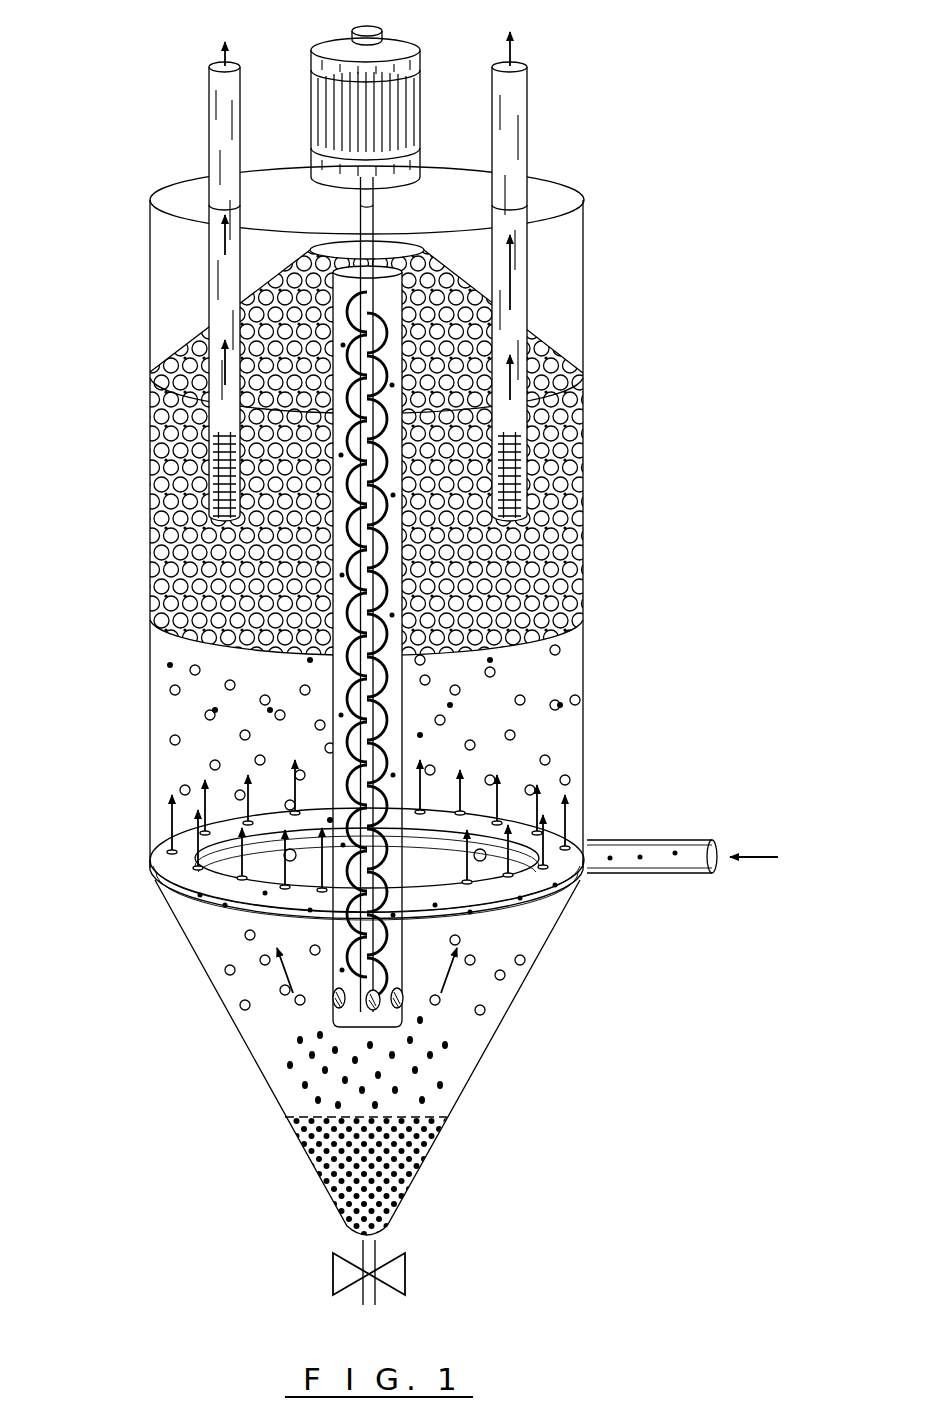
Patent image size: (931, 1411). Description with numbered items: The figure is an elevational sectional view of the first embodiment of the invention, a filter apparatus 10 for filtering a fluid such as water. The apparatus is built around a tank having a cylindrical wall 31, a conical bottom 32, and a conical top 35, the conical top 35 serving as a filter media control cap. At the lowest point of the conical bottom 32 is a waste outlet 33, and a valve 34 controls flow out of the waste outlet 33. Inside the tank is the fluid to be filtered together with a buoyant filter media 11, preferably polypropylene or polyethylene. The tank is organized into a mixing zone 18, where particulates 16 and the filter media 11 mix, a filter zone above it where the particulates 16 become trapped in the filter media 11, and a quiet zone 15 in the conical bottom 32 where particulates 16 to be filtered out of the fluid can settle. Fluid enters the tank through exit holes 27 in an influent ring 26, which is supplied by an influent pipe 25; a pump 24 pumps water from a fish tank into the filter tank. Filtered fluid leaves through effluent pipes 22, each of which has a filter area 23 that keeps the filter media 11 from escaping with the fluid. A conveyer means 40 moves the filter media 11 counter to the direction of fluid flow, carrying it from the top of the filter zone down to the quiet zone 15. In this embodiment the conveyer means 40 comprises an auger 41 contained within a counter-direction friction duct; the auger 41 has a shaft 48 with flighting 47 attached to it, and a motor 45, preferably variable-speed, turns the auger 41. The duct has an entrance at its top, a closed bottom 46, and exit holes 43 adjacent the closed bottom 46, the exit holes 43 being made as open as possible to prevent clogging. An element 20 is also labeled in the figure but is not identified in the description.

The filter apparatus 10 is at (98, 60).
The buoyant filter media 11 is at (585, 510).
The quiet zone 15 is at (228, 957).
The particulates 16 is at (195, 402).
The mixing zone 18 is at (178, 697).
The vessel top 20 is at (585, 385).
The effluent pipes 22 is at (209, 95).
The filter area 23 is at (215, 472).
The pump 24 is at (528, 483).
The influent pipe 25 is at (670, 872).
The influent ring 26 is at (150, 866).
The exit holes 27 is at (175, 848).
The cylindrical wall 31 is at (590, 712).
The conical bottom 32 is at (330, 1006).
The waste outlet 33 is at (376, 1250).
The valve 34 is at (405, 1268).
The conical top 35 is at (235, 335).
The conveyer means 40 is at (330, 266).
The auger 41 is at (330, 650).
The exit holes 43 is at (345, 1008).
The motor 45 is at (420, 100).
The closed bottom 46 is at (405, 1040).
The flighting 47 is at (395, 667).
The shaft 48 is at (375, 197).